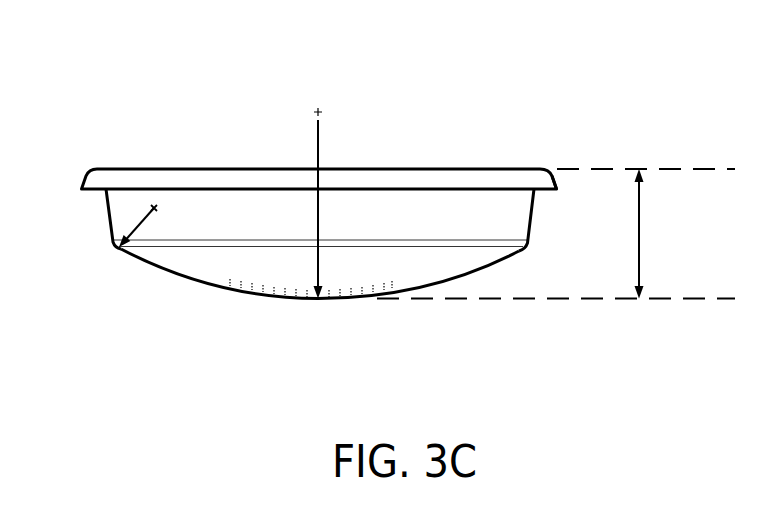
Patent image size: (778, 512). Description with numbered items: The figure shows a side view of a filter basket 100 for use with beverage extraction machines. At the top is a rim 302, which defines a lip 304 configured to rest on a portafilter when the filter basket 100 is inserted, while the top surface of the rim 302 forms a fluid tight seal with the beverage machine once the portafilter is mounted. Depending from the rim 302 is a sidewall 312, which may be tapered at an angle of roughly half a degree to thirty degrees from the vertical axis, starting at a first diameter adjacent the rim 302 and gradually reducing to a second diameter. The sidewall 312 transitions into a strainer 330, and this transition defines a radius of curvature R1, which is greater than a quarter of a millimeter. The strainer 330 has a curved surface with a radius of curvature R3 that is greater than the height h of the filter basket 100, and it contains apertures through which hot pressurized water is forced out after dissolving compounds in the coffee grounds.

The filter basket 100 is at (384, 198).
The rim 302 is at (518, 168).
The lip 304 is at (543, 190).
The sidewall 312 is at (107, 212).
The strainer 330 is at (320, 303).
The radius of curvature R1 is at (138, 228).
The radius of curvature R3 is at (318, 217).
The height h is at (640, 235).